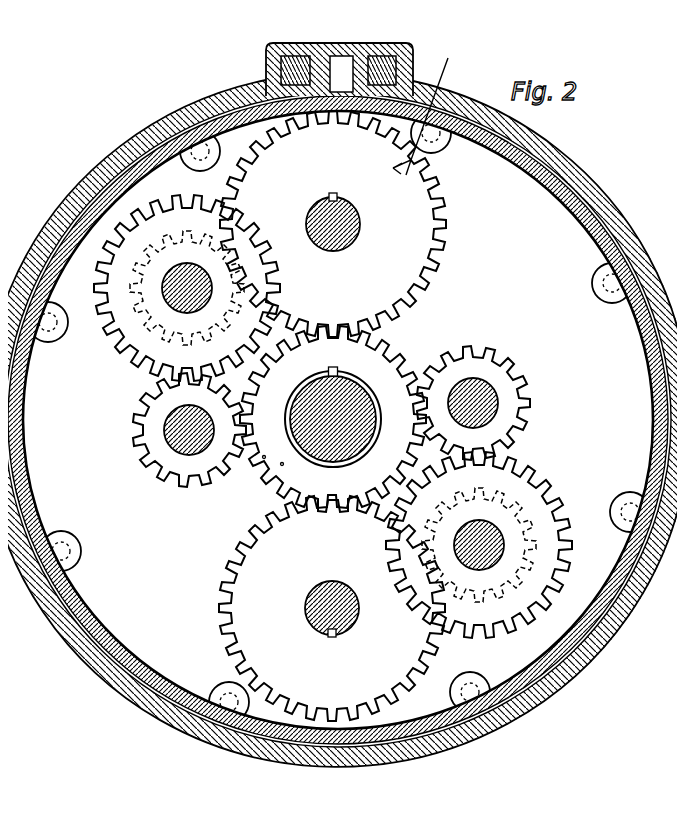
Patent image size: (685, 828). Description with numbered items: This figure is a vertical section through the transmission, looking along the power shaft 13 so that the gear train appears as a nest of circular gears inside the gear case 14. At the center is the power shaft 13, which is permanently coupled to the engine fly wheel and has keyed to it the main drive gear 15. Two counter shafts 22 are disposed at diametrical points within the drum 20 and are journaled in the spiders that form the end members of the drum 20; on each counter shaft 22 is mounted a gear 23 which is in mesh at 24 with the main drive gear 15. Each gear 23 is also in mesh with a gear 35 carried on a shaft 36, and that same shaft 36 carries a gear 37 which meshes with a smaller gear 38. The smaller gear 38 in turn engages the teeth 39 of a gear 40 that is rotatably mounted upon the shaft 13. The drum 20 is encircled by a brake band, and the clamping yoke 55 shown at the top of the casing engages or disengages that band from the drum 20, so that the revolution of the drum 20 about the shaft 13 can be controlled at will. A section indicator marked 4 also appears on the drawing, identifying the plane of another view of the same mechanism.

The section line 4- 4 is at (426, 106).
The power shaft 13 is at (336, 447).
The gear case 14 is at (174, 100).
The main drive gear 15 is at (333, 414).
The drum 20 is at (553, 166).
The counter shaft 22 is at (354, 217).
The gear 23 is at (331, 416).
The mesh 24 is at (327, 323).
The gear 35 is at (181, 326).
The shaft 36 is at (188, 264).
The gear 37 is at (351, 416).
The smaller gear 38 is at (146, 457).
The teeth 39 is at (256, 449).
The gear 40 is at (274, 456).
The clamping yoke 55 is at (370, 52).